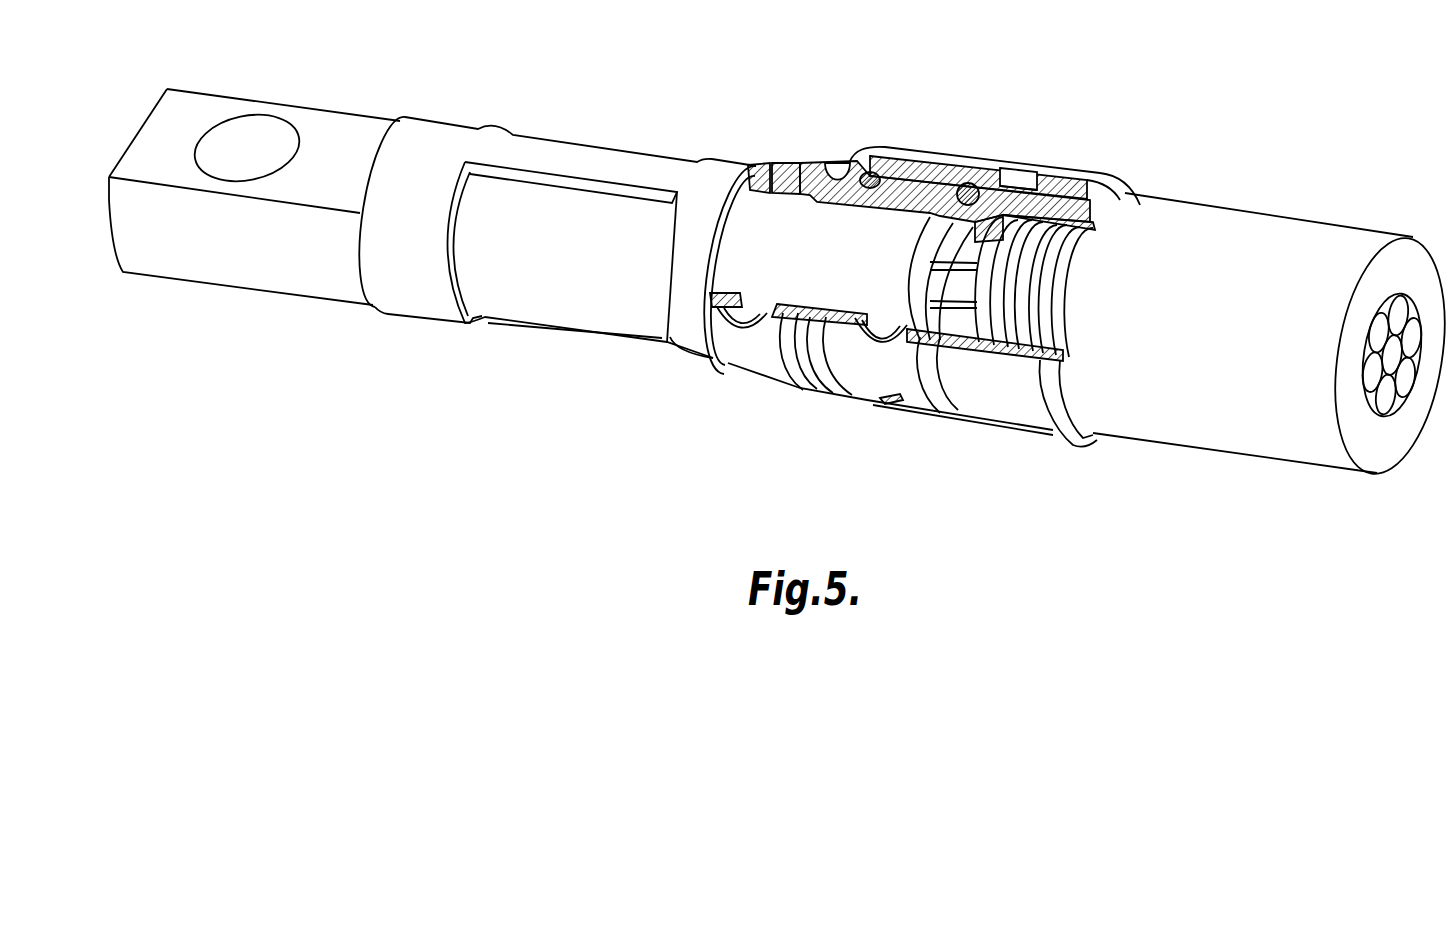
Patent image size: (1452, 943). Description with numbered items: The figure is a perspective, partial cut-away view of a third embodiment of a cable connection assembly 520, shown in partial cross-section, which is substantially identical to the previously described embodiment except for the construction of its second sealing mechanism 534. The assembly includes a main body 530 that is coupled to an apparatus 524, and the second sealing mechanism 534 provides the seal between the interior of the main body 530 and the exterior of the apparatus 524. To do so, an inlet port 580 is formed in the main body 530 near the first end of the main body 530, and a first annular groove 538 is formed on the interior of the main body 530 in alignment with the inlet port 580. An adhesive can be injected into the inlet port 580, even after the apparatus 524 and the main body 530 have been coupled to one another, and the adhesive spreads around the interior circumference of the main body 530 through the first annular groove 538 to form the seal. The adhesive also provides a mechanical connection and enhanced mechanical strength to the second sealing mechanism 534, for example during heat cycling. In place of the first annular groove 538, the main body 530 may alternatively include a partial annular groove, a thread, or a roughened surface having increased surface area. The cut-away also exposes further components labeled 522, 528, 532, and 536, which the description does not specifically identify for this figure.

The cable connection assembly 520 is at (969, 110).
The cable 522 is at (1236, 196).
The apparatus 524 is at (488, 116).
The cable strands 528 is at (1285, 230).
The main body 530 is at (793, 173).
The threads 532 is at (1095, 246).
The second sealing mechanism 534 is at (748, 180).
The outer sleeve 536 is at (1075, 160).
The first annular groove 538 is at (780, 180).
The inlet port 580 is at (748, 320).